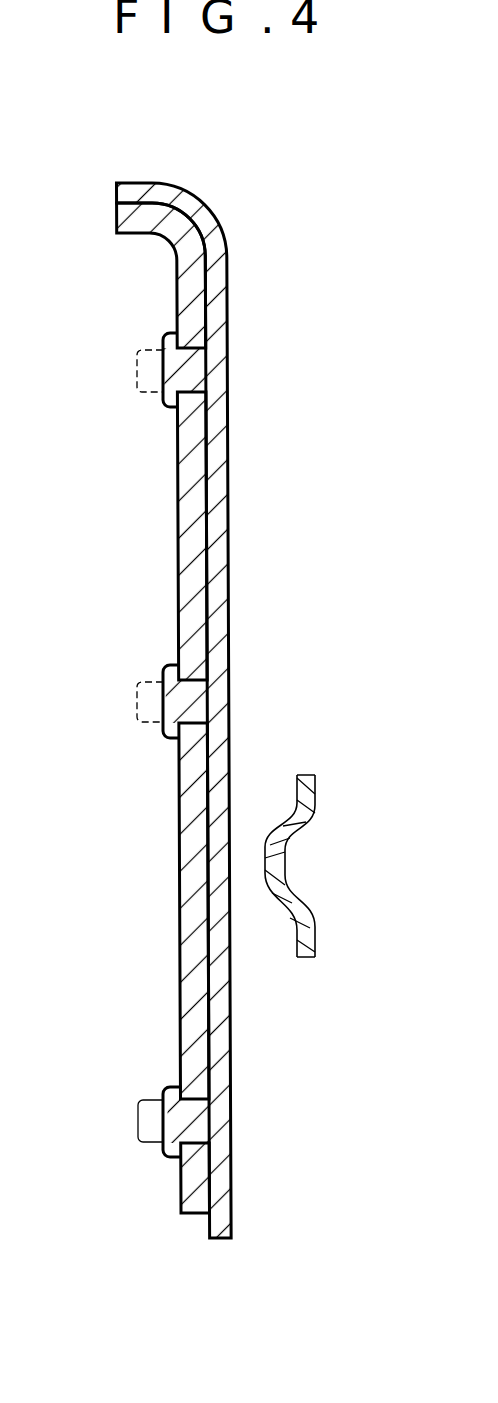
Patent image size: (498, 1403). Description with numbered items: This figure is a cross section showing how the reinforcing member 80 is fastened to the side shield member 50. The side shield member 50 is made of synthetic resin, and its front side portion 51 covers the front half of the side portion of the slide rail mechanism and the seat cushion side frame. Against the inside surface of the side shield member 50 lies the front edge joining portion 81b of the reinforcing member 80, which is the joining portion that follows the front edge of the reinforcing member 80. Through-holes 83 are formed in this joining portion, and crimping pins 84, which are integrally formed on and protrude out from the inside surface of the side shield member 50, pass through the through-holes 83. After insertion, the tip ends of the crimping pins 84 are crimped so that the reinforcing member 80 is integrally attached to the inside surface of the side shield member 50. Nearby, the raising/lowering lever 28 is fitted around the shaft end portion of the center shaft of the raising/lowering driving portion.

The raising/lowering lever 28 is at (284, 863).
The side shield member 50 is at (244, 710).
The front side portion 51 is at (218, 560).
The reinforcing member 80 is at (126, 708).
The front edge joining portion 81b is at (177, 519).
The through-holes 83 is at (193, 352).
The crimping pins 84 is at (183, 372).